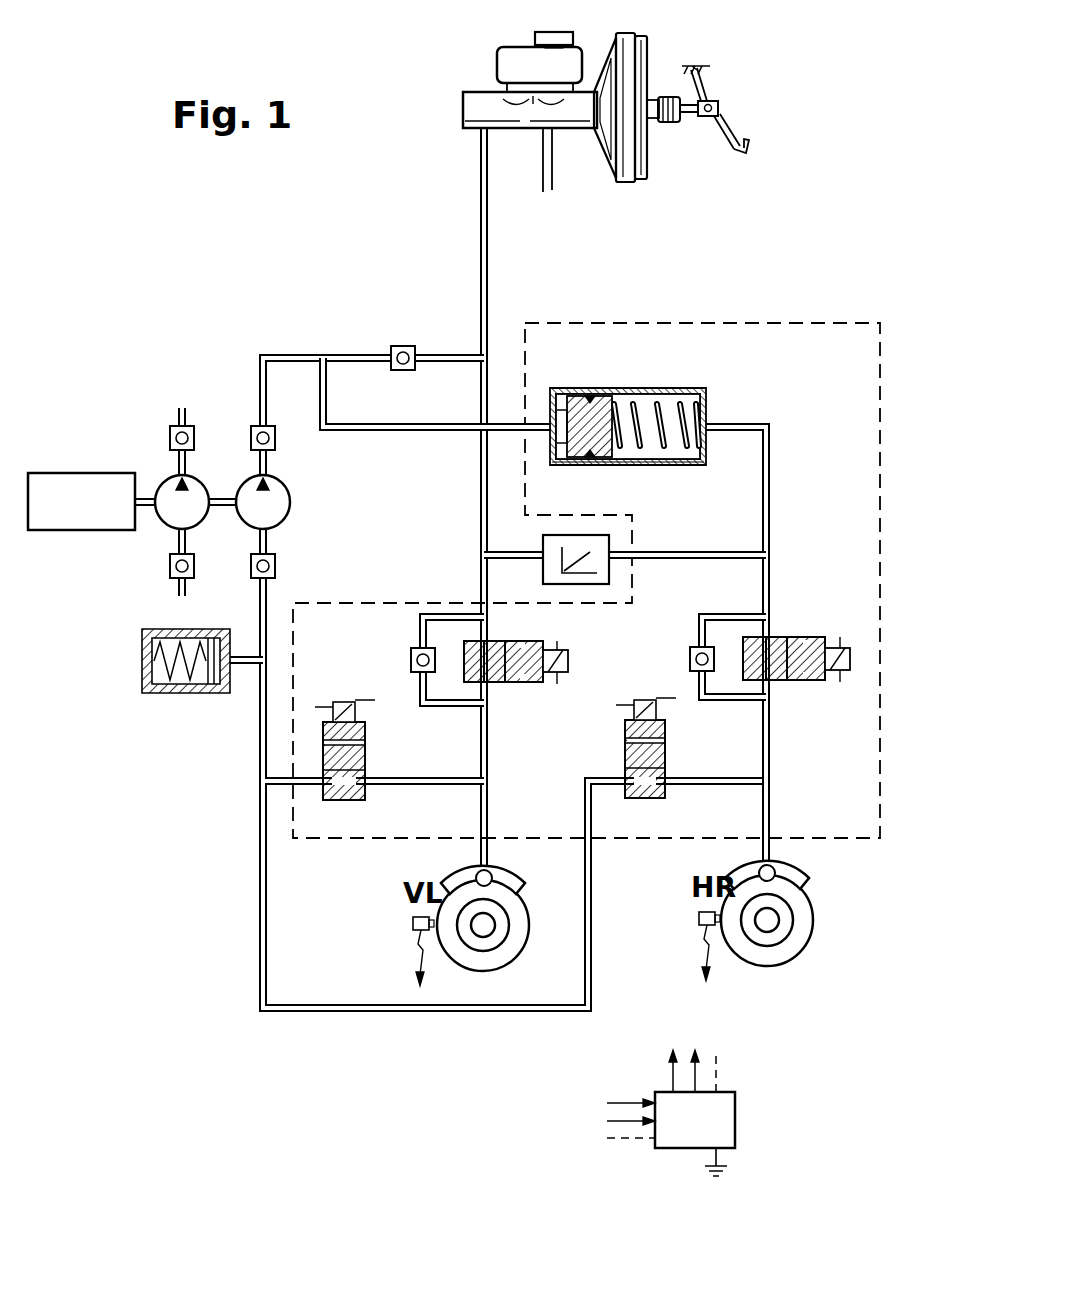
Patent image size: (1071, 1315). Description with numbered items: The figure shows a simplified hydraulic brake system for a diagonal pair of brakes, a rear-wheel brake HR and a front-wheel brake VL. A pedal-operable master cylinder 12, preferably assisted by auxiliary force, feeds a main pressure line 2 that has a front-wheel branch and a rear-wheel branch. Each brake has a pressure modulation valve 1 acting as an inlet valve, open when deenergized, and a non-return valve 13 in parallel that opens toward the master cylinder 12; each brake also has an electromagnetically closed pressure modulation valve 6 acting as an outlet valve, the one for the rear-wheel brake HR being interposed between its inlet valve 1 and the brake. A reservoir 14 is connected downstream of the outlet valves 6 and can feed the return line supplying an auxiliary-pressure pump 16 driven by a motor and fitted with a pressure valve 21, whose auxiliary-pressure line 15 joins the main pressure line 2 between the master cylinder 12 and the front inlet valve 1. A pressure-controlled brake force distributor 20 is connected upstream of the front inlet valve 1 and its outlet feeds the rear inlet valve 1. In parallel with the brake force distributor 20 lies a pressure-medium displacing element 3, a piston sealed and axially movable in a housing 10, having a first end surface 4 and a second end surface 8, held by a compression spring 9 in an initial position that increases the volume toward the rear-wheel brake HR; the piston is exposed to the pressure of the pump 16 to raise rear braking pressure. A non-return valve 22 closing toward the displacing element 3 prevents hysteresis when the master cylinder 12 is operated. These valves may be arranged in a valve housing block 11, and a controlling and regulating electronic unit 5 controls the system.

The pressure modulation valve (inlet valve) 1 is at (540, 641).
The main pressure line 2 is at (490, 268).
The pressure-medium displacing element 3 is at (703, 392).
The first end surface 4 is at (558, 392).
The controlling and regulating electronic unit 5 is at (668, 1150).
The pressure modulation valve (outlet valve) 6 is at (367, 749).
The second end surface 8 is at (622, 394).
The compression spring 9 is at (664, 394).
The housing 10 is at (670, 468).
The valve housing block 11 is at (738, 322).
The master cylinder 12 is at (462, 100).
The non-return valve 13 is at (409, 661).
The reservoir 14 is at (184, 696).
The auxiliary-pressure line 15 is at (264, 345).
The auxiliary-pressure pump 16 is at (287, 515).
The brake force distributor 20 is at (585, 534).
The pressure valve 21 is at (278, 445).
The non-return valve 22 is at (403, 344).